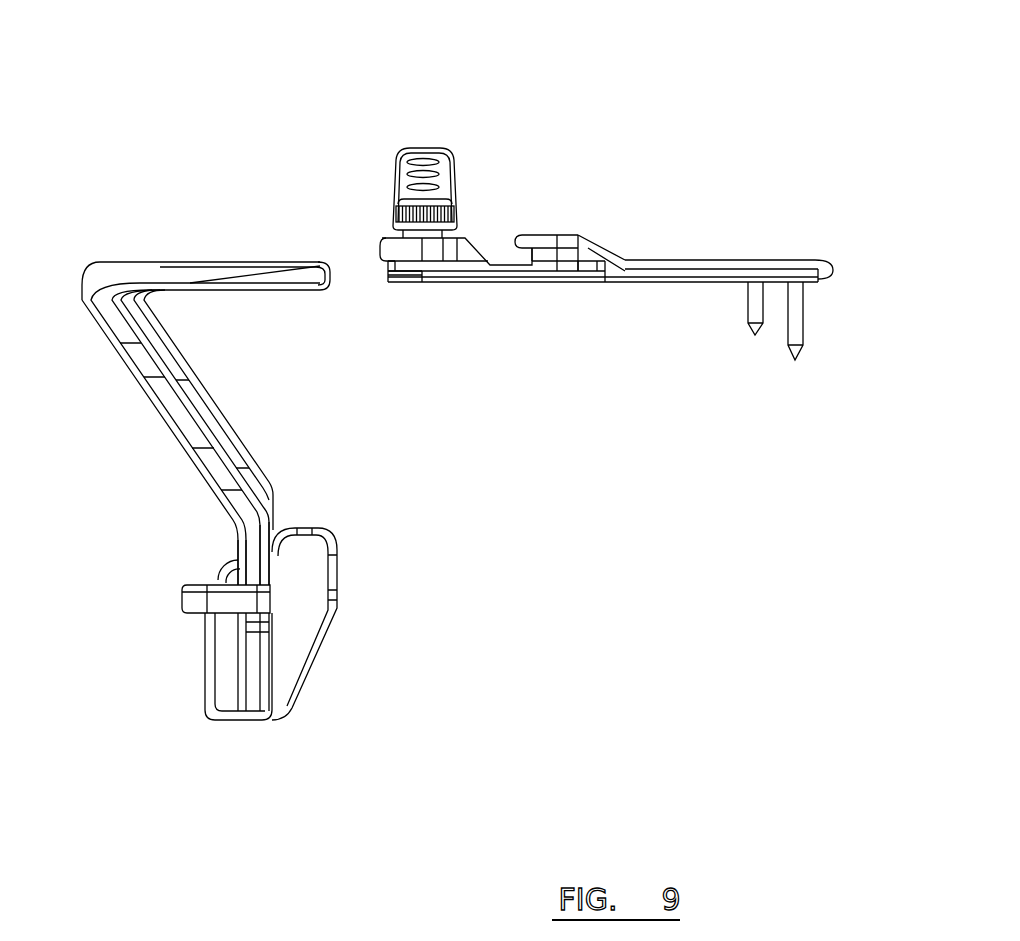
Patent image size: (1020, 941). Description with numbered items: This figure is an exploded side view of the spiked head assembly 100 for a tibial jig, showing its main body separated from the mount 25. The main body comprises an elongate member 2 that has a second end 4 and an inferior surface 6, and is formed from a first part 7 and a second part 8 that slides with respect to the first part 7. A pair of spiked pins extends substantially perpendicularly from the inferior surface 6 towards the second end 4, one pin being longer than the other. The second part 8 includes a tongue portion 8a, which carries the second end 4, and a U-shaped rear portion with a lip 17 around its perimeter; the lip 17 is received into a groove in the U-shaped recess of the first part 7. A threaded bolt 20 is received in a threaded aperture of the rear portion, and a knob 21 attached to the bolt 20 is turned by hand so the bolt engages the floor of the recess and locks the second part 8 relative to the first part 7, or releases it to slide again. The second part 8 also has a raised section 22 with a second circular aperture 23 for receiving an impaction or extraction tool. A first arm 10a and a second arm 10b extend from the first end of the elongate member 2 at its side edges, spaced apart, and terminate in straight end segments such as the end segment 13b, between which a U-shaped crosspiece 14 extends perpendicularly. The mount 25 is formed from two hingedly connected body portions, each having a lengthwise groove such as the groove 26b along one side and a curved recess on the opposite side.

The elongate member 2 is at (402, 118).
The second end 4 is at (831, 260).
The inferior surface 6 is at (254, 297).
The first part 7 is at (125, 260).
The second part 8 is at (670, 259).
The tongue portion 8a is at (745, 259).
The first arm 10a is at (207, 422).
The second arm 10b is at (177, 423).
The straight end segment 13b is at (255, 548).
The U-shaped crosspiece 14 is at (185, 598).
The lip 17 is at (433, 284).
The threaded bolt 20 is at (410, 237).
The knob 21 is at (431, 147).
The raised section 22 is at (578, 237).
The second circular aperture 23 is at (544, 250).
The mount 25 is at (325, 660).
The groove 26b is at (253, 703).
The spiked head assembly 100 is at (636, 130).